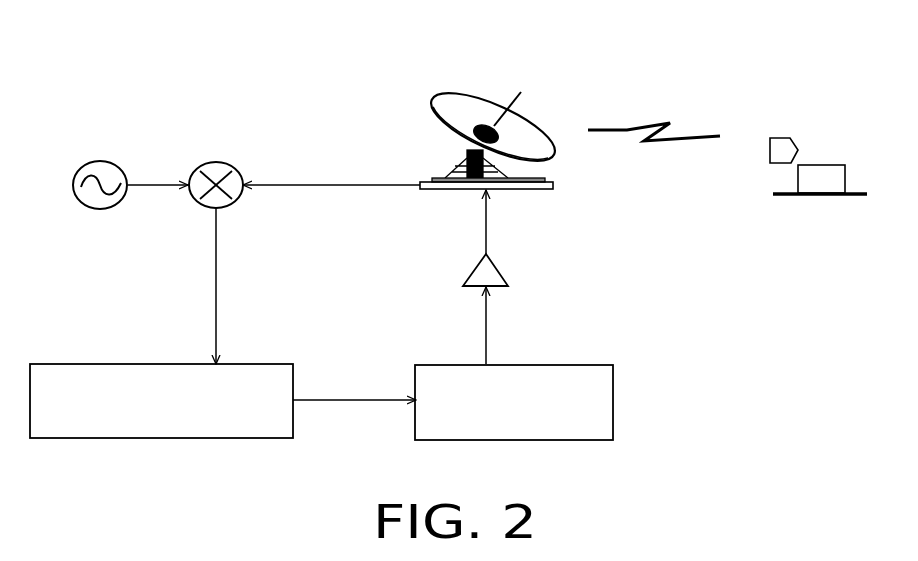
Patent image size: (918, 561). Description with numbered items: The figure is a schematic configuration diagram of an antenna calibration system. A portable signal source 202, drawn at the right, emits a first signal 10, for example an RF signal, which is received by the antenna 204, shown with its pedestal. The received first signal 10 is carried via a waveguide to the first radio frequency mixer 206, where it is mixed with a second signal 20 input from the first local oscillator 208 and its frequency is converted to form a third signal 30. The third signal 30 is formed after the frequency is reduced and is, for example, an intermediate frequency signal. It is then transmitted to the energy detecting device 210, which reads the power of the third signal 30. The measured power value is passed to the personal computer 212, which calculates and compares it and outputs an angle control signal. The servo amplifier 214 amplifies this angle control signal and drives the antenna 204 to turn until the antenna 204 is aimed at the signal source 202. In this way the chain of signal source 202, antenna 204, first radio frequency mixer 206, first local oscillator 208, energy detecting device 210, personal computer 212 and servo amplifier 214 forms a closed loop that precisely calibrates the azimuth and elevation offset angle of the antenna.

The signal source 202 is at (826, 165).
The antenna 204 is at (490, 92).
The first radio frequency mixer 206 is at (218, 162).
The first local oscillator 208 is at (103, 160).
The energy detecting device 210 is at (213, 440).
The personal computer 212 is at (614, 400).
The servo amplifier 214 is at (502, 270).
The first signal 10 is at (300, 188).
The second signal 20 is at (148, 188).
The third signal 30 is at (214, 316).